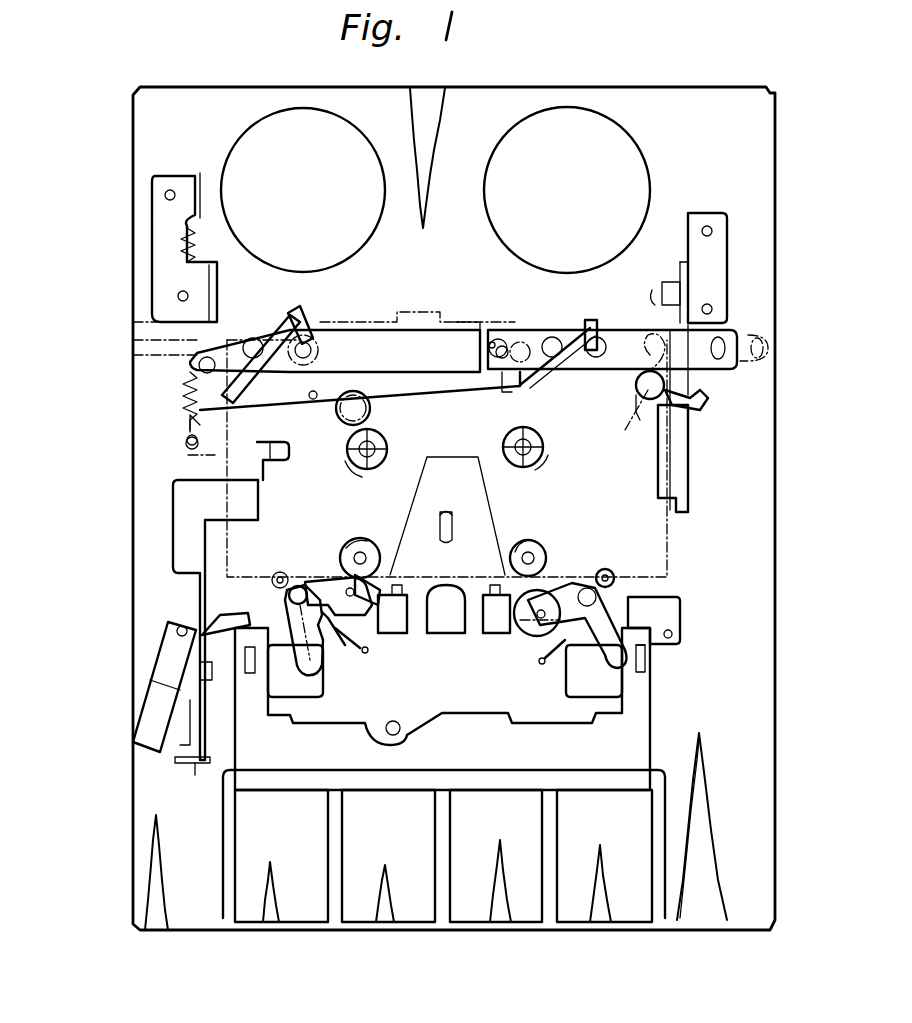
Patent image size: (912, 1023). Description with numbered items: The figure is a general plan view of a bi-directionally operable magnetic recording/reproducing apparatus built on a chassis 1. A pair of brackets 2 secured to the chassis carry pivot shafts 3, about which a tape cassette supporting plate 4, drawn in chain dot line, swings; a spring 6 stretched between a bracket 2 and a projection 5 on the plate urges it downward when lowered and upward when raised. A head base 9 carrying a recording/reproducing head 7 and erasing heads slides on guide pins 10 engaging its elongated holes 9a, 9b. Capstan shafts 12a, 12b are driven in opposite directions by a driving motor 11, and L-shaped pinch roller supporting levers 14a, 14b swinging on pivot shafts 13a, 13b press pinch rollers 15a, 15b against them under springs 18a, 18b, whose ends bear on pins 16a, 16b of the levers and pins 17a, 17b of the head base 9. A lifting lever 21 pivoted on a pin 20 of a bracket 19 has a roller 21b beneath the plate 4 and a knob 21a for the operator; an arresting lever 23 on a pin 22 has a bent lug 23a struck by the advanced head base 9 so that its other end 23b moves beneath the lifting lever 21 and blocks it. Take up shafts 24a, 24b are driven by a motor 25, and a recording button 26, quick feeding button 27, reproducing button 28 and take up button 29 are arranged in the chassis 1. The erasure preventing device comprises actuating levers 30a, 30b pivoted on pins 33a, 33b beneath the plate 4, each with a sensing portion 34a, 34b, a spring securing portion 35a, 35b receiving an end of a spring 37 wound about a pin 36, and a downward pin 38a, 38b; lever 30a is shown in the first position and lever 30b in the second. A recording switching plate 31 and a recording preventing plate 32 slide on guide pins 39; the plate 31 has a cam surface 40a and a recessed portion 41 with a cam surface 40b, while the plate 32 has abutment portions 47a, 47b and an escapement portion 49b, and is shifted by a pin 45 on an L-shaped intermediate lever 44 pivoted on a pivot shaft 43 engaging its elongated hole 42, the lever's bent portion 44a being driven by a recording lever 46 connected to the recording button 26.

The chassis 1 is at (790, 648).
The bracket 2 is at (158, 175).
The pivot shaft 3 is at (210, 258).
The tape cassette supporting plate 4 is at (667, 575).
The projection 5 is at (182, 450).
The spring 6 is at (185, 415).
The recording/reproducing head 7 is at (442, 633).
The head base 9 is at (470, 705).
The elongated hole 9a is at (460, 540).
The elongated hole 9b is at (650, 685).
The guide pin 10 is at (452, 510).
The driving motor 11 is at (372, 193).
The capstan shaft 12a is at (368, 545).
The capstan shaft 12b is at (537, 545).
The pivot shaft 13a is at (290, 580).
The pivot shaft 13b is at (610, 568).
The pinch roller supporting lever 14a is at (320, 580).
The pinch roller supporting lever 14b is at (560, 580).
The pinch roller 15a is at (388, 578).
The pinch roller 15b is at (525, 630).
The pin 16a is at (323, 685).
The pin 16b is at (578, 690).
The pin 17a is at (366, 654).
The pin 17b is at (544, 665).
The spring 18a is at (340, 635).
The spring 18b is at (640, 588).
The bracket 19 is at (206, 680).
The pin 20 is at (170, 655).
The lifting lever 21 is at (195, 572).
The knob 21a is at (195, 770).
The roller 21b is at (275, 460).
The pin 22 is at (200, 620).
The arresting lever 23 is at (176, 632).
The bent lug 23a is at (245, 585).
The end 23b is at (188, 750).
The take up shaft 24a is at (388, 445).
The take up shaft 24b is at (530, 470).
The motor 25 is at (645, 188).
The recording button 26 is at (572, 795).
The quick feeding button 27 is at (475, 795).
The reproducing button 28 is at (372, 795).
The take up button 29 is at (292, 795).
The actuating lever 30a is at (275, 386).
The actuating lever 30b is at (580, 372).
The recording switching plate 31 is at (725, 372).
The recording preventing plate 32 is at (455, 390).
The pin 33a is at (285, 338).
The pin 33b is at (548, 337).
The sensing portion 34a is at (295, 312).
The sensing portion 34b is at (590, 320).
The spring securing portion 35a is at (203, 442).
The spring securing portion 35b is at (505, 380).
The pin 36 is at (372, 405).
The spring 37 is at (313, 400).
The pin 38a is at (199, 366).
The pin 38b is at (478, 340).
The guide pin 39 is at (272, 372).
The cam surface 40a is at (180, 348).
The cam surface 40b is at (440, 368).
The recessed portion 41 is at (488, 462).
The elongated hole 42 is at (620, 410).
The pivot shaft 43 is at (643, 405).
The intermediate lever 44 is at (705, 402).
The bent portion 44a is at (188, 390).
The pin 45 is at (727, 325).
The recording lever 46 is at (688, 485).
The abutment portion 47a is at (160, 322).
The abutment portion 47b is at (500, 322).
The escapement portion 49b is at (532, 385).